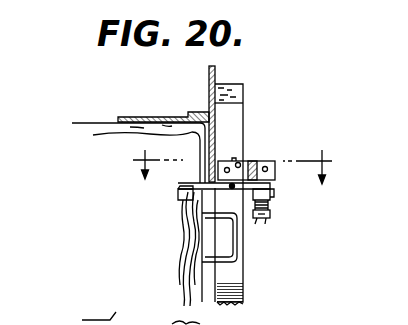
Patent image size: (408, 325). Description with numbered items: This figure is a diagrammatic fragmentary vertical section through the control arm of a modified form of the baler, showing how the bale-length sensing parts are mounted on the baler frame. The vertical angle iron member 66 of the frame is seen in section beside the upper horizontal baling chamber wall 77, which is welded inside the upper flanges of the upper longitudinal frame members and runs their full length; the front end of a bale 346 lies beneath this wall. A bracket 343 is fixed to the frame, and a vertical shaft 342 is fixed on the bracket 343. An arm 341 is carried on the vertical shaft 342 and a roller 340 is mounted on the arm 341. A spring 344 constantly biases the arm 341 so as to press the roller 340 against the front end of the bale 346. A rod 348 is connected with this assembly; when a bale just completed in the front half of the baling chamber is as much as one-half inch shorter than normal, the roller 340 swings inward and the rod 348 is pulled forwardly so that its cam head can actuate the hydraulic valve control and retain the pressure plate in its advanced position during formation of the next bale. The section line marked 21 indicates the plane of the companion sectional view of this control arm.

The vertical angle iron member 66 is at (246, 84).
The upper horizontal baling chamber wall 77 is at (136, 115).
The bale 346 is at (97, 122).
The rod 348 is at (233, 185).
The bracket 343 is at (268, 160).
The spring 344 is at (272, 207).
The vertical shaft 342 is at (271, 220).
The arm 341 is at (188, 184).
The roller 340 is at (181, 196).
The section line 21- 21 is at (233, 173).